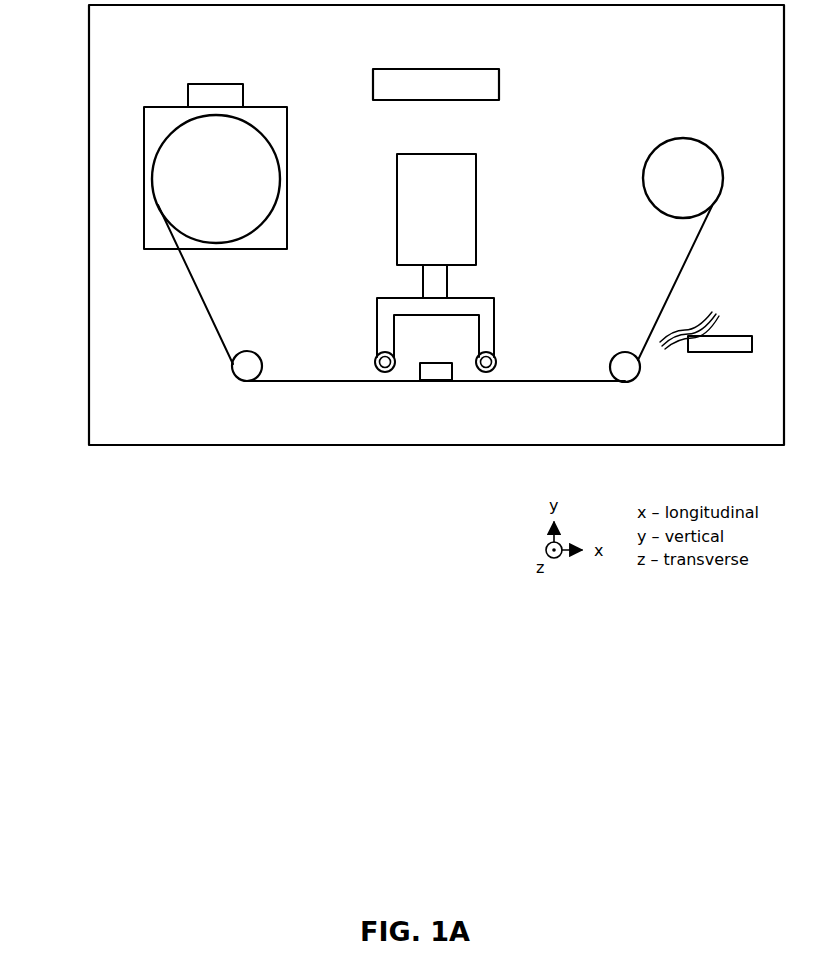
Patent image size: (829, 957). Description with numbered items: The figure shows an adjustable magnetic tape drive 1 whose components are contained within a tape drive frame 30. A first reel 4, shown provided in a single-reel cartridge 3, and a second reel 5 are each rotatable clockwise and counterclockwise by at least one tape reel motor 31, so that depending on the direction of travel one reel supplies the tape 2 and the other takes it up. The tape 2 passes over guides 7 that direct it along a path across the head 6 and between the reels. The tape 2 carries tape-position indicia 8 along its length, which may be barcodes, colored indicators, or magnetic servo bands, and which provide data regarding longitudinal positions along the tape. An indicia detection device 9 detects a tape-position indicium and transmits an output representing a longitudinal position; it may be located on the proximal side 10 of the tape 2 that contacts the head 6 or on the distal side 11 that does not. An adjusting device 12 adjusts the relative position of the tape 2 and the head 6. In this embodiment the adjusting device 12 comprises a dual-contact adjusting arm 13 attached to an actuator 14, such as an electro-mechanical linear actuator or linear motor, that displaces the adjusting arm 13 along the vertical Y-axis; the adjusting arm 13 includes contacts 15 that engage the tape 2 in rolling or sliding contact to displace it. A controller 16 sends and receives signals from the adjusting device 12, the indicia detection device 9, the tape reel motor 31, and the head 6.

The tape drive 1 is at (66, 211).
The tape 2 is at (205, 318).
The single-reel cartridge 3 is at (164, 107).
The first reel 4 is at (279, 176).
The second reel 5 is at (690, 140).
The head 6 is at (420, 385).
The guides 7 is at (240, 371).
The tape-position indicia 8 is at (719, 312).
The indicia detection device 9 is at (706, 352).
The proximal side 10 is at (564, 377).
The distal side 11 is at (574, 386).
The adjusting device 12 is at (367, 271).
The adjusting arm 13 is at (485, 299).
The actuator 14 is at (476, 176).
The contacts 15 is at (375, 357).
The controller 16 is at (436, 69).
The tape drive frame 30 is at (89, 62).
The tape reel motor 31 is at (215, 84).